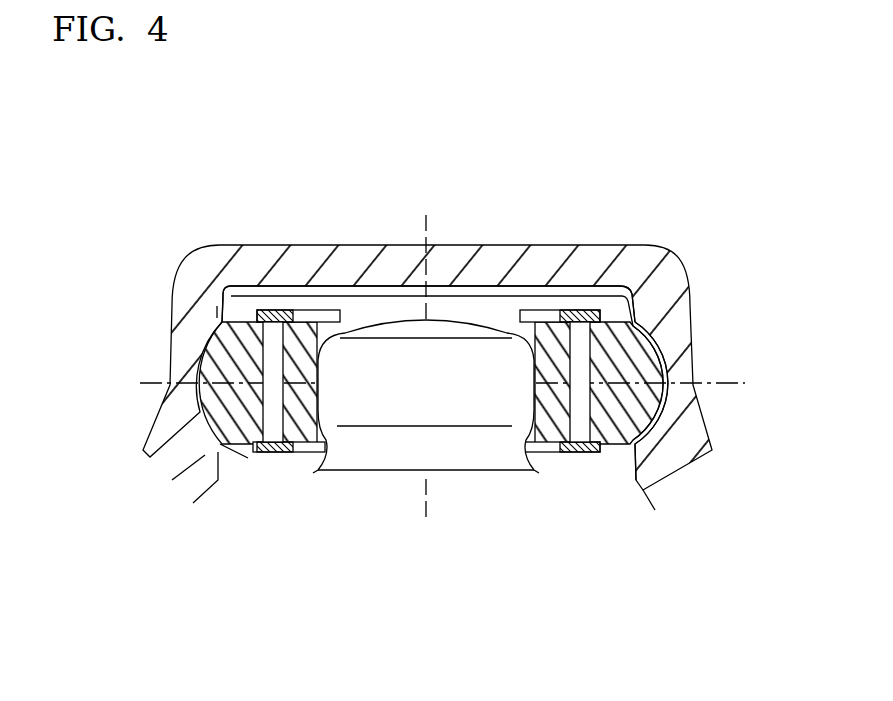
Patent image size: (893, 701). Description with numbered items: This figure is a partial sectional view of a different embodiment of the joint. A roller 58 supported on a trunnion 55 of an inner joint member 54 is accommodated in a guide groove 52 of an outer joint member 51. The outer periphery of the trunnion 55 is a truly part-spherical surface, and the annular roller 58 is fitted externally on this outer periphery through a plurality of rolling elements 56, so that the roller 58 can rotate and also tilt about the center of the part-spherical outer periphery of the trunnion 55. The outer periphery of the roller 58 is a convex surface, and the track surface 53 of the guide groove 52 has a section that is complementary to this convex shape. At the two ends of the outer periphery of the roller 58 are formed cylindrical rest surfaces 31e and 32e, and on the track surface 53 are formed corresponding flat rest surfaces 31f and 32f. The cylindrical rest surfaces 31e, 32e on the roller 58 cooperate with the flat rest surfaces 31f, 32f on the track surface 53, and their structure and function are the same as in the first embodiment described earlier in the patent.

The outer joint member 51 is at (389, 248).
The guide groove 52 is at (457, 296).
The track surface 53 is at (203, 370).
The inner joint member 54 is at (533, 468).
The trunnion 55 is at (492, 348).
The rolling elements 56 is at (583, 343).
The roller 58 is at (650, 407).
The cylindrical rest surface 31e is at (222, 297).
The flat rest surface 31f is at (210, 312).
The cylindrical rest surface 32e is at (236, 460).
The flat rest surface 32f is at (209, 460).